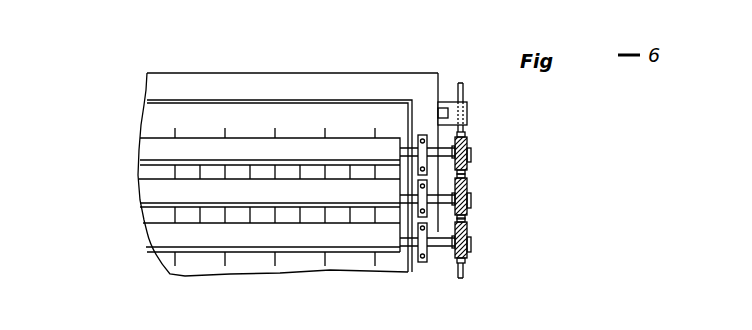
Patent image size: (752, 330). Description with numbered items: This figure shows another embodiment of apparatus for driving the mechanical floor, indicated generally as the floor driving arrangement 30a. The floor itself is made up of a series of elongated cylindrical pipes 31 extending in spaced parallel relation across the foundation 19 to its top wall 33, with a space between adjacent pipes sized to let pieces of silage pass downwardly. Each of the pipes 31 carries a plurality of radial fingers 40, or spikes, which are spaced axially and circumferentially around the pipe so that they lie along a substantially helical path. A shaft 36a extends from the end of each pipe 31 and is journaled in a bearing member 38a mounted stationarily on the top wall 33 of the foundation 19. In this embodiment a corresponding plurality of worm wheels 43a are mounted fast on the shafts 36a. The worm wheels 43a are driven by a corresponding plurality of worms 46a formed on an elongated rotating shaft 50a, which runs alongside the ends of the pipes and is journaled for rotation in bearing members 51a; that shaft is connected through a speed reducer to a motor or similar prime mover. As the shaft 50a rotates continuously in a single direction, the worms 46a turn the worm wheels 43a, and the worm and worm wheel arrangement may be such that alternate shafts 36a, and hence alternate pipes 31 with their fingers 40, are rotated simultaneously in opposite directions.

The foundation 19 is at (307, 52).
The top wall 33 is at (415, 123).
The cylindrical pipes 31 is at (198, 141).
The radial fingers 40 is at (226, 130).
The floor driving arrangement 30a is at (510, 199).
The bearing member 38a is at (400, 152).
The shaft 36a is at (432, 143).
The bearing members 51a is at (468, 115).
The elongated shaft 50a is at (464, 92).
The worm wheels 43a is at (464, 138).
The worms 46a is at (471, 162).